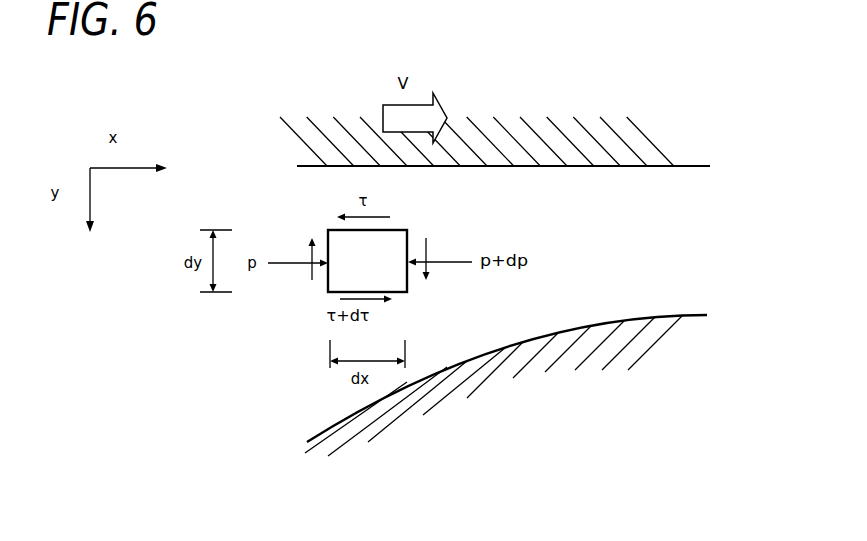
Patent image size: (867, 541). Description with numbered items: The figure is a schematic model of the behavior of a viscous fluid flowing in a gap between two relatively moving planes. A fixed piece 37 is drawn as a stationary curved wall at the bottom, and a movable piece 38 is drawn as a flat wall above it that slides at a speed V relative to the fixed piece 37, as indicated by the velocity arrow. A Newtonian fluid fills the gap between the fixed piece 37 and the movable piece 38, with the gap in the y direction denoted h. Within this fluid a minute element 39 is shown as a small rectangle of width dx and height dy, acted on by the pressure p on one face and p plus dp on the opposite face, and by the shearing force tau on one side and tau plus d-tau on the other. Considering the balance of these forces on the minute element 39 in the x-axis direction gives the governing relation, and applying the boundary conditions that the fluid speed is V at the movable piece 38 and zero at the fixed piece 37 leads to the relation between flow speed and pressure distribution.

The fixed piece 37 is at (637, 318).
The movable piece 38 is at (653, 152).
The minute element 39 is at (367, 261).